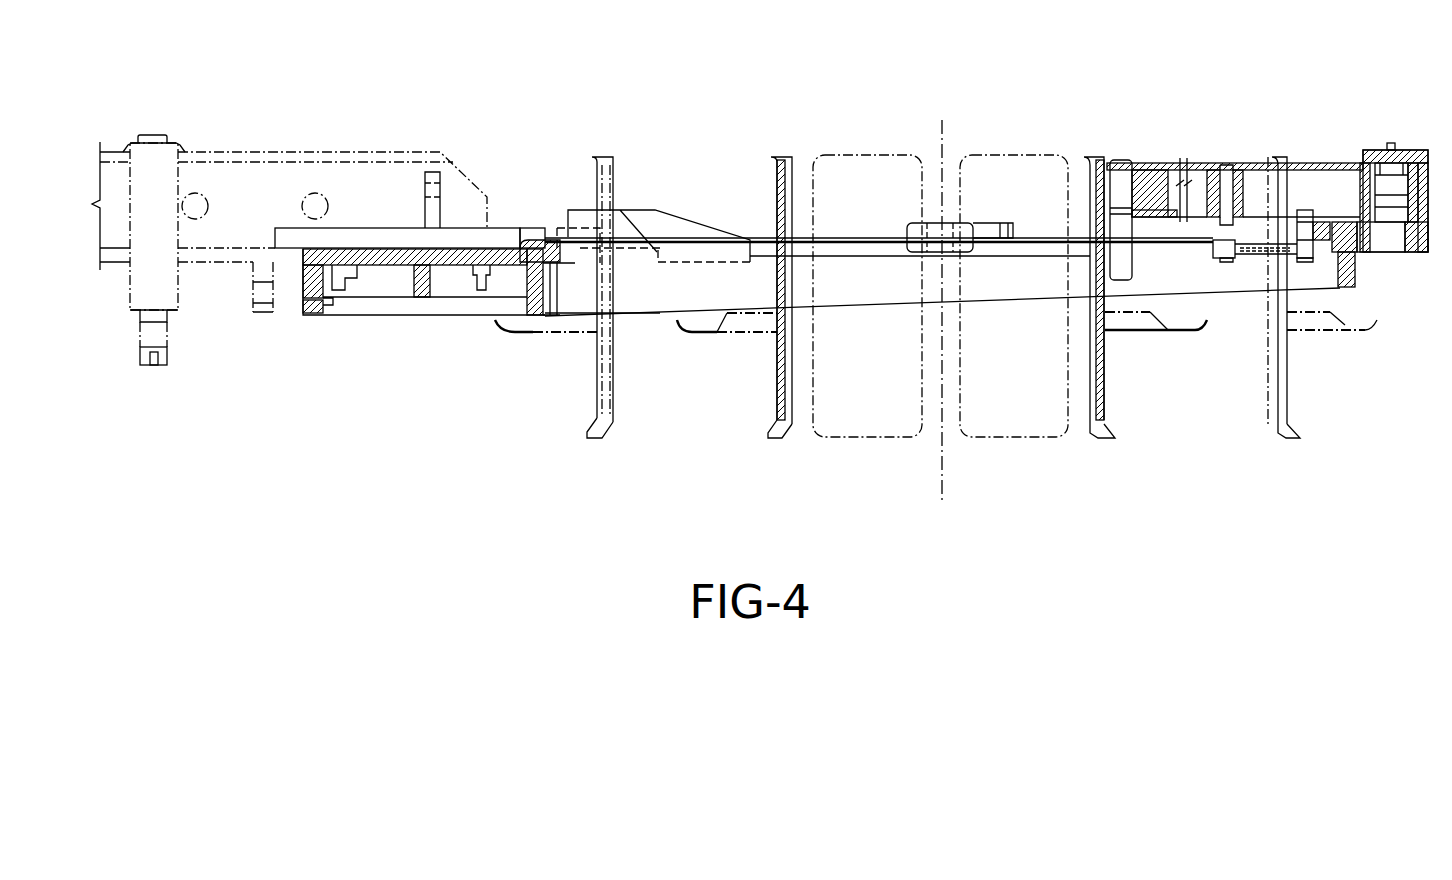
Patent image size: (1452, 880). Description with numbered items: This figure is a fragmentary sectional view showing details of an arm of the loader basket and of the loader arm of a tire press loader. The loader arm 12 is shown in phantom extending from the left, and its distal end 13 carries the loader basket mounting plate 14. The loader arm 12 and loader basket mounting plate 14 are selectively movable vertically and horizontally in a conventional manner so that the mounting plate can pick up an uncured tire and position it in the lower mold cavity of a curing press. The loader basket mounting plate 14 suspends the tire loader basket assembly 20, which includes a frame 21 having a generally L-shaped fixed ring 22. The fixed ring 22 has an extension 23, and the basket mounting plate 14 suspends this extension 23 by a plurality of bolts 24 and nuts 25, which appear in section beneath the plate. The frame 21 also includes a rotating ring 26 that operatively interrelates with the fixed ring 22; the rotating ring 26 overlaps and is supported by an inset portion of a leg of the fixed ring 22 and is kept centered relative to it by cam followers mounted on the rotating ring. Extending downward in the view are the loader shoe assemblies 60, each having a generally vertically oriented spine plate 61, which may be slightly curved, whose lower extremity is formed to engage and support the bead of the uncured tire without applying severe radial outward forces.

The loader arm 12 is at (220, 148).
The distal end 13 is at (375, 152).
The loader basket mounting plate 14 is at (290, 228).
The tire loader basket assembly 20 is at (1441, 162).
The frame 21 is at (1380, 264).
The fixed ring 22 is at (1348, 290).
The extension 23 is at (383, 257).
The bolts 24 is at (487, 287).
The nuts 25 is at (463, 268).
The rotating ring 26 is at (1310, 212).
The loader shoe assemblies 60 is at (799, 152).
The spine plate 61 is at (787, 437).